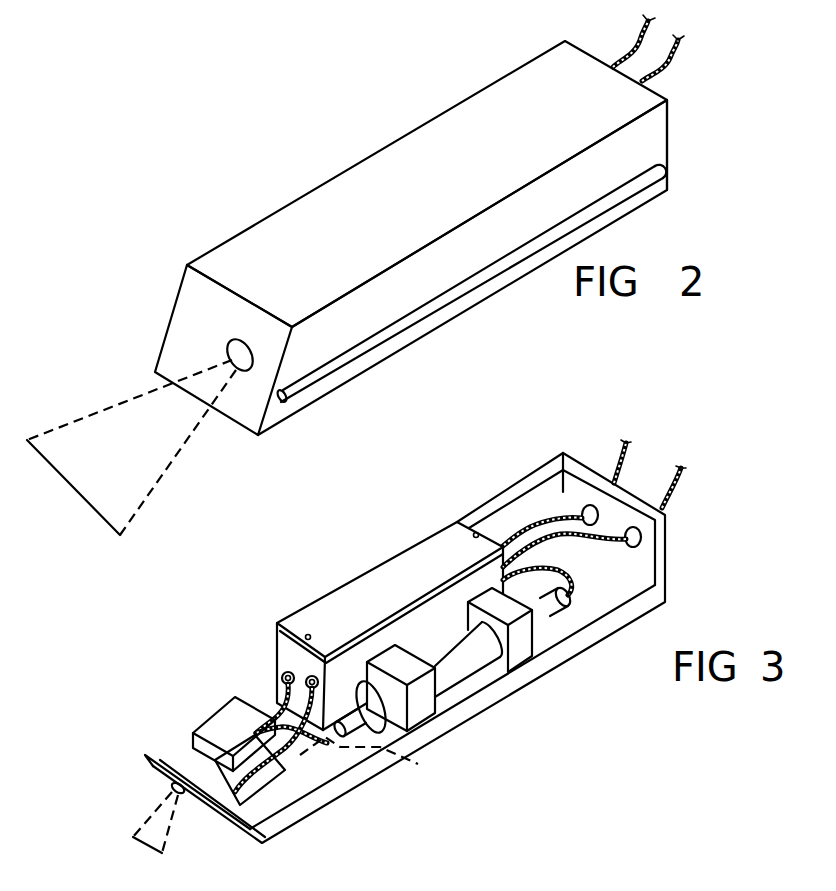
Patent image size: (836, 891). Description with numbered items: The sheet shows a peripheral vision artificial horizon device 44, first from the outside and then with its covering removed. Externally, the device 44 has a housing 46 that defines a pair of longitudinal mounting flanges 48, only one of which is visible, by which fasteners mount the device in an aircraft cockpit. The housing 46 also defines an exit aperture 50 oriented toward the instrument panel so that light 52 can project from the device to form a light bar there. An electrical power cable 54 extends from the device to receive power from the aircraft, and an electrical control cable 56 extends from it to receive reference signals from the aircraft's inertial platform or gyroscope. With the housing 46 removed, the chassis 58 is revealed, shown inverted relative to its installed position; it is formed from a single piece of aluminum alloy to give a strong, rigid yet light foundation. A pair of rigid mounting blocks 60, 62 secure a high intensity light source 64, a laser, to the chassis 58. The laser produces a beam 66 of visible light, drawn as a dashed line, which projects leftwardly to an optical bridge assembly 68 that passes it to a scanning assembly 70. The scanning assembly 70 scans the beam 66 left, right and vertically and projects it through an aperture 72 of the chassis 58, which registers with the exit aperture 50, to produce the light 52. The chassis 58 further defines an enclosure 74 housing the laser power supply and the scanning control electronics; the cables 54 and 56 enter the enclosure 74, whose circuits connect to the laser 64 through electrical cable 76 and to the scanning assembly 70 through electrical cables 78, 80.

In FIG. 2, the peripheral vision artificial horizon device 44 is at (315, 175).
In FIG. 2, the housing 46 is at (657, 150).
In FIG. 2, the longitudinal mounting flanges 48 is at (330, 365).
In FIG. 2, the exit aperture 50 is at (232, 350).
In FIG. 2, the light 52 is at (52, 420).
In FIG. 3, the light 52 is at (133, 852).
In FIG. 2, the electrical power cable 54 is at (678, 62).
In FIG. 3, the electrical power cable 54 is at (612, 466).
In FIG. 2, the electrical control cable 56 is at (632, 52).
In FIG. 3, the electrical control cable 56 is at (680, 478).
In FIG. 3, the chassis 58 is at (526, 676).
In FIG. 3, the mounting block 60 is at (423, 713).
In FIG. 3, the mounting block 62 is at (527, 650).
In FIG. 3, the high intensity light source 64 is at (466, 665).
In FIG. 3, the beam 66 is at (376, 761).
In FIG. 3, the optical bridge assembly 68 is at (312, 784).
In FIG. 3, the scanning assembly 70 is at (186, 724).
In FIG. 3, the aperture 72 is at (172, 793).
In FIG. 3, the enclosure 74 is at (436, 553).
In FIG. 3, the electrical cable 76 is at (572, 578).
In FIG. 3, the electrical cable 78 is at (268, 710).
In FIG. 3, the electrical cable 80 is at (307, 676).